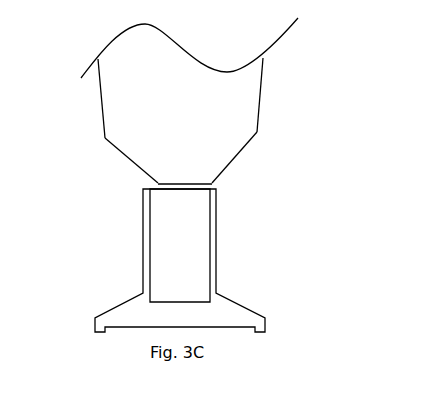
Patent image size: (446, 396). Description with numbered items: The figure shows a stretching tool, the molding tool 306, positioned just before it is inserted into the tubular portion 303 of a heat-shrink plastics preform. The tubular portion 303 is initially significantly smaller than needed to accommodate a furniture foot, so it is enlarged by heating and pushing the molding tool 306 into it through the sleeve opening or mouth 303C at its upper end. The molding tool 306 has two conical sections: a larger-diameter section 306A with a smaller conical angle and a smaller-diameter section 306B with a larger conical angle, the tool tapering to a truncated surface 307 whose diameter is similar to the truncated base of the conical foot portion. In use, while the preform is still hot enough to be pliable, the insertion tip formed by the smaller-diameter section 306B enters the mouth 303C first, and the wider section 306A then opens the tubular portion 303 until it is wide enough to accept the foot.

The tubular portion 303 is at (181, 260).
The sleeve opening 303C is at (178, 197).
The molding tool 306 is at (198, 101).
The larger-diameter section 306A is at (263, 82).
The smaller-diameter section 306B is at (242, 158).
The truncated surface 307 is at (160, 185).